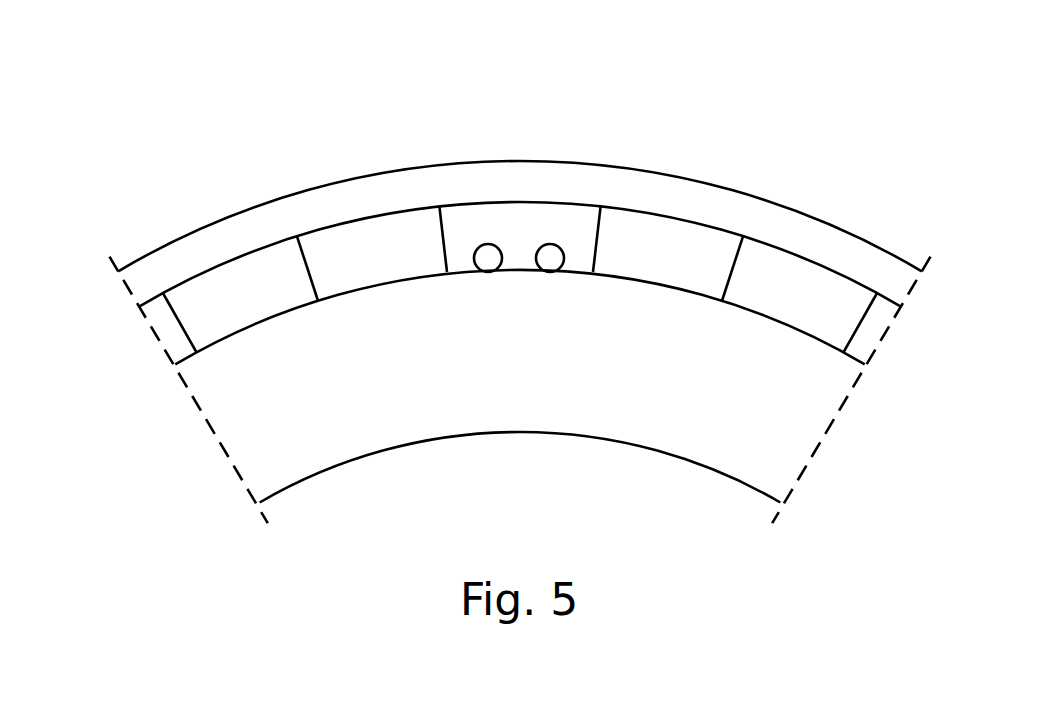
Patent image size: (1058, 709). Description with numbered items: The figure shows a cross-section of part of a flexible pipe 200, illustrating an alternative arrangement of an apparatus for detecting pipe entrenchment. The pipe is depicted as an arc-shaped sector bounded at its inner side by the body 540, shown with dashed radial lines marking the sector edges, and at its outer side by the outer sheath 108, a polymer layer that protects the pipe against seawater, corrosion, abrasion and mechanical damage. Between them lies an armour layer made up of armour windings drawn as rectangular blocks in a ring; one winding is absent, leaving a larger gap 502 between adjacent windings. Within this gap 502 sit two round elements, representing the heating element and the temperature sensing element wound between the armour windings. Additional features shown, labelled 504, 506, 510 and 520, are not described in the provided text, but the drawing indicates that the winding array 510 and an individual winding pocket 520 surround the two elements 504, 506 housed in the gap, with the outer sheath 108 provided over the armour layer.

The outer sheath 108 is at (230, 230).
The flexible pipe 200 is at (722, 135).
The gap 502 is at (527, 235).
The conductor 504 is at (557, 240).
The conductor 506 is at (498, 240).
The segment array 510 is at (427, 132).
The segment pocket 520 is at (710, 238).
The body 540 is at (247, 455).